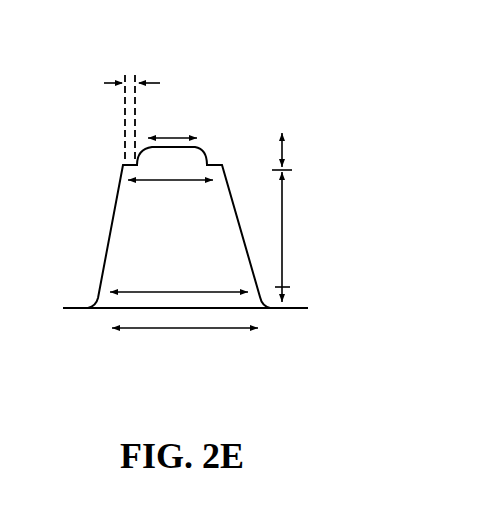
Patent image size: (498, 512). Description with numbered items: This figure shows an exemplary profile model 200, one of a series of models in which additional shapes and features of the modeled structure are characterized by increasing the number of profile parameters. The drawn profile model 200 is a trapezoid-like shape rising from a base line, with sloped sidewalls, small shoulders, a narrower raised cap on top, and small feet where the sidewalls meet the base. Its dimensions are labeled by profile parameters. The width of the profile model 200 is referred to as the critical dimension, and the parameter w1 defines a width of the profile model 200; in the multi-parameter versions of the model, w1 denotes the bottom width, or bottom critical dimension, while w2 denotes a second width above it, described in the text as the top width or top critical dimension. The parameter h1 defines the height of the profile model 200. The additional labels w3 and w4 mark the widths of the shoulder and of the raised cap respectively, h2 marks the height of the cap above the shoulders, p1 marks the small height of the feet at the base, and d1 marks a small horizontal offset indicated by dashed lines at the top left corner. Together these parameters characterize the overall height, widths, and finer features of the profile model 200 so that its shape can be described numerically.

The profile model 200 is at (222, 118).
The top taper offset dimension d1 is at (132, 102).
The profile parameter w1 is at (185, 360).
The profile parameter w2 is at (179, 276).
The shoulder width w3 is at (170, 198).
The top cap width w4 is at (172, 120).
The profile parameter h1 is at (305, 237).
The cap height h2 is at (301, 151).
The foot height p1 is at (303, 281).